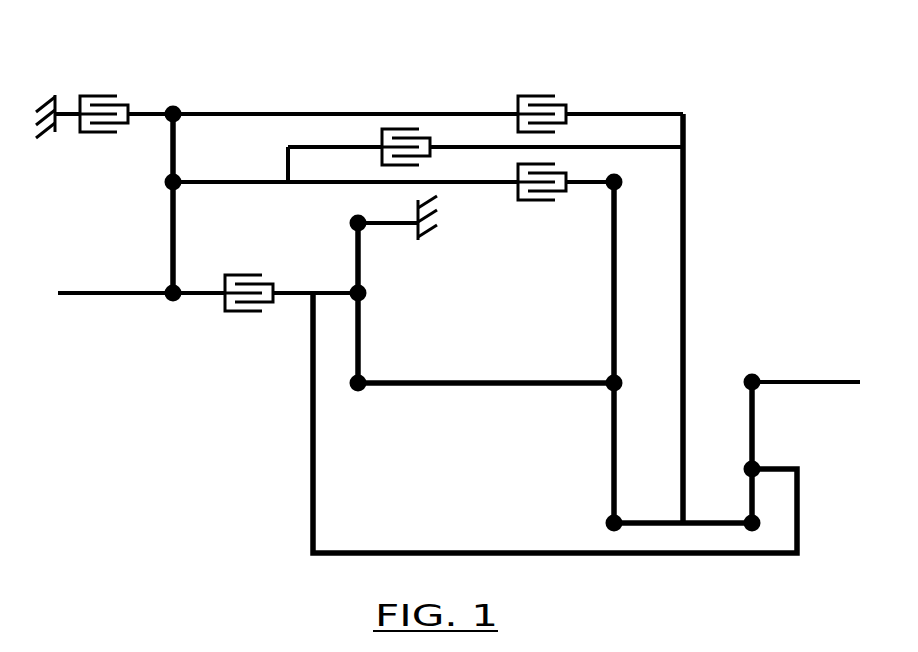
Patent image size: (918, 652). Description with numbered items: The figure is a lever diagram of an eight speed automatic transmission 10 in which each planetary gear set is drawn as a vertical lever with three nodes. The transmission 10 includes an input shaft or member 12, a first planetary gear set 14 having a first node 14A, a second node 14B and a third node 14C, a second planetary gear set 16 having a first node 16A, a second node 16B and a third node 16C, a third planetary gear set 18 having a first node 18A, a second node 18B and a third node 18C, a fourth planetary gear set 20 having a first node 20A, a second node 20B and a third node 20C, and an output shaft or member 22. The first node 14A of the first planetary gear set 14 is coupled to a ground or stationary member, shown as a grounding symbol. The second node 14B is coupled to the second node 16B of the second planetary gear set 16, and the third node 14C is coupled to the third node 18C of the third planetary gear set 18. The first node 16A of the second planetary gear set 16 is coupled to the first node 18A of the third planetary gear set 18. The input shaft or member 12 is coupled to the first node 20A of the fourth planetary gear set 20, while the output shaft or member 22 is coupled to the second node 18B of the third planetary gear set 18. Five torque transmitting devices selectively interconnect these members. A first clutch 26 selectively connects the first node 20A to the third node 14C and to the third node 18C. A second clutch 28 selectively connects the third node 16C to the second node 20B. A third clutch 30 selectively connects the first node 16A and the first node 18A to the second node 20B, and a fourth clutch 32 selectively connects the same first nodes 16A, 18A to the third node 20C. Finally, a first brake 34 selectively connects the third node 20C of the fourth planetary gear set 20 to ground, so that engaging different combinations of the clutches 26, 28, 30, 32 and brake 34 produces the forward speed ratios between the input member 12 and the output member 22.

The automatic transmission 10 is at (793, 135).
The input shaft or member 12 is at (108, 294).
The first planetary gear set 14 is at (358, 410).
The first node of first planetary gear set 14A is at (352, 220).
The second node of first planetary gear set 14B is at (366, 380).
The third node of first planetary gear set 14C is at (350, 290).
The second planetary gear set 16 is at (590, 476).
The first node of second planetary gear set 16A is at (621, 522).
The second node of second planetary gear set 16B is at (621, 382).
The third node of second planetary gear set 16C is at (620, 186).
The third planetary gear set 18 is at (765, 358).
The first node of third planetary gear set 18A is at (745, 522).
The second node of third planetary gear set 18B is at (745, 382).
The third node of third planetary gear set 18C is at (758, 468).
The fourth planetary gear set 20 is at (133, 200).
The first node of fourth planetary gear set 20A is at (165, 290).
The second node of fourth planetary gear set 20B is at (179, 176).
The third node of fourth planetary gear set 20C is at (179, 110).
The output shaft or member 22 is at (831, 385).
The first clutch 26 is at (249, 311).
The second clutch 28 is at (537, 201).
The third clutch 30 is at (381, 137).
The fourth clutch 32 is at (533, 96).
The first brake 34 is at (97, 96).